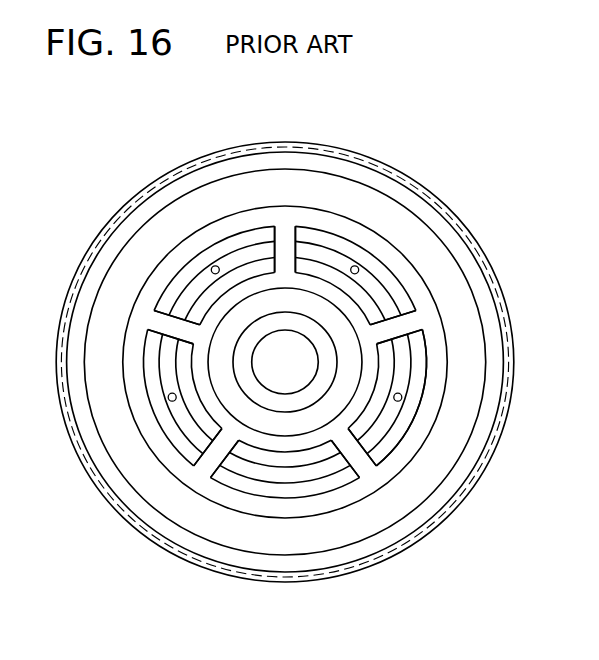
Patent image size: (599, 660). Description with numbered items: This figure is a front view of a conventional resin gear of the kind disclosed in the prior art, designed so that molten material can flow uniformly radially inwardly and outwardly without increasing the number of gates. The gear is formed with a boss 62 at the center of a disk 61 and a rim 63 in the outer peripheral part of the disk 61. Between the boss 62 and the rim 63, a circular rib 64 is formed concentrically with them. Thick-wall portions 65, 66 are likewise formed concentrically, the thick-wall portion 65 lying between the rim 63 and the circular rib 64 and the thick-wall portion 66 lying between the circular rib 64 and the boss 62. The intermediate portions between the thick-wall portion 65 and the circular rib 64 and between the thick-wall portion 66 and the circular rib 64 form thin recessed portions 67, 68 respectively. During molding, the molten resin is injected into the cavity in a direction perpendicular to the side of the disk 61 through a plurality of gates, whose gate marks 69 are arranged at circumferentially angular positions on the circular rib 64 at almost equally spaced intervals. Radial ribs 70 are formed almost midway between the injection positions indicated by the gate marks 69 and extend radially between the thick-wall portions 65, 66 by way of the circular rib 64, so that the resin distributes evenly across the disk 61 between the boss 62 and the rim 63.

The disk 61 is at (314, 147).
The boss 62 is at (287, 400).
The rim 63 is at (355, 170).
The circular rib 64 is at (405, 347).
The thick-wall portion 65 is at (352, 315).
The thick-wall portion 66 is at (372, 245).
The thin recessed portion 67 is at (370, 435).
The thin recessed portion 68 is at (403, 417).
The gate mark 69 is at (402, 393).
The radial rib 70 is at (398, 323).